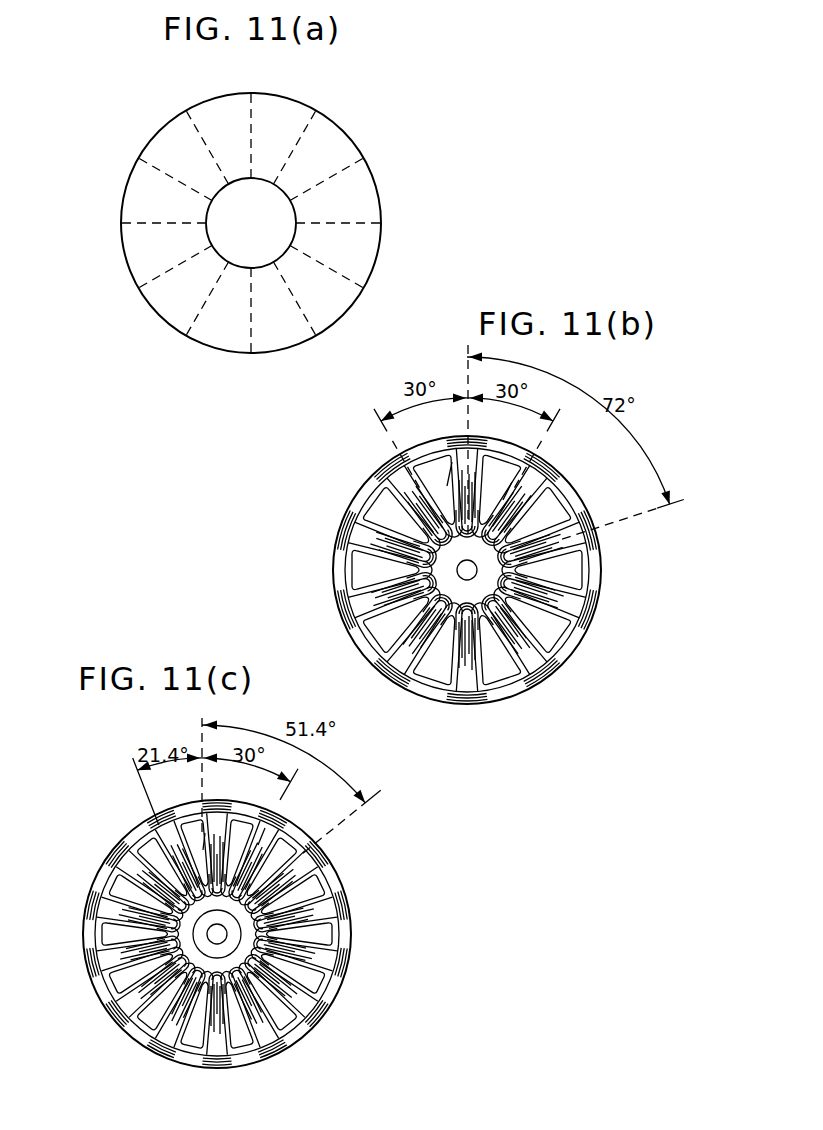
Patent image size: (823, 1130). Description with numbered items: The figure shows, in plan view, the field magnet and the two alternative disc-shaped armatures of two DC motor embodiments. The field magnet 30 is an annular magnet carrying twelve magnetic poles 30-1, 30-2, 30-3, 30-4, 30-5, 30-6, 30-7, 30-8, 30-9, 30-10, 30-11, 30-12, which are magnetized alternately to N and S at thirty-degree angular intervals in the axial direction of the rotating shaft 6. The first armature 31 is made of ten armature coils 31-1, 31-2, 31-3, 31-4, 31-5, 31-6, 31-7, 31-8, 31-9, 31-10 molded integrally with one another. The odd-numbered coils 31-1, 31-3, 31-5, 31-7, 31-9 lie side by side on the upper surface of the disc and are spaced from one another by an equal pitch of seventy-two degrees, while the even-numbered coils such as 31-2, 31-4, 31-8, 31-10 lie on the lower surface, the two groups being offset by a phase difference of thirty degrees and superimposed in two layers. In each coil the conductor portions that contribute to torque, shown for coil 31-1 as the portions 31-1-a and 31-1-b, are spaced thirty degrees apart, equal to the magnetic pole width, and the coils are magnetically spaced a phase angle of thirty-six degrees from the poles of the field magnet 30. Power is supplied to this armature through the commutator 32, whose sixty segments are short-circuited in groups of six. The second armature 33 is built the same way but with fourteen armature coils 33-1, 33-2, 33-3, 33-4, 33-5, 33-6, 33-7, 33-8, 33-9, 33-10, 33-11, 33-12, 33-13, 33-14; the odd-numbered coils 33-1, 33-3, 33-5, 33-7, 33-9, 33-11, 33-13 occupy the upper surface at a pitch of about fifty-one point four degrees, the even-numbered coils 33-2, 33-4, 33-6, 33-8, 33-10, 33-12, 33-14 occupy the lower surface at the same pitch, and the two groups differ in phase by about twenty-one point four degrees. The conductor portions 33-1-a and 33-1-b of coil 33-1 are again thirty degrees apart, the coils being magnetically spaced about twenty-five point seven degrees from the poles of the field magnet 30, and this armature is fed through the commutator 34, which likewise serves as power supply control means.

The field magnet 30 is at (380, 215).
The magnetic pole 30-1 is at (282, 102).
The magnetic pole 30-2 is at (345, 137).
The magnetic pole 30-3 is at (377, 193).
The magnetic pole 30-4 is at (380, 262).
The magnetic pole 30-5 is at (350, 309).
The magnetic pole 30-6 is at (285, 338).
The magnetic pole 30-7 is at (218, 340).
The magnetic pole 30-8 is at (167, 313).
The magnetic pole 30-9 is at (133, 244).
The magnetic pole 30-10 is at (135, 192).
The magnetic pole 30-11 is at (163, 137).
The magnetic pole 30-12 is at (218, 103).
The armature 31 is at (659, 631).
The armature coil 31-1 is at (482, 462).
The armature coil 31-2 is at (573, 493).
The armature coil 31-3 is at (600, 556).
The armature coil 31-4 is at (568, 653).
The armature coil 31-5 is at (515, 697).
The armature coil 31-6 is at (426, 697).
The armature coil 31-7 is at (368, 650).
The armature coil 31-8 is at (340, 563).
The armature coil 31-9 is at (357, 497).
The armature coil 31-10 is at (418, 444).
The conductor portion 31-1-a is at (453, 462).
The conductor portion 31-1-b is at (512, 482).
The commutator 32 is at (510, 565).
The rotating shaft 6 is at (457, 573).
The armature 33 is at (408, 906).
The armature coil 33-1 is at (229, 812).
The armature coil 33-2 is at (308, 833).
The armature coil 33-3 is at (333, 868).
The armature coil 33-4 is at (348, 953).
The armature coil 33-5 is at (332, 987).
The armature coil 33-6 is at (307, 1038).
The armature coil 33-7 is at (248, 1062).
The armature coil 33-8 is at (190, 1068).
The armature coil 33-9 is at (132, 1040).
The armature coil 33-10 is at (103, 992).
The armature coil 33-11 is at (88, 933).
The armature coil 33-12 is at (100, 873).
The armature coil 33-13 is at (128, 830).
The armature coil 33-14 is at (165, 808).
The conductor portion 33-1-a is at (205, 833).
The conductor portion 33-1-b is at (265, 828).
The commutator 34 is at (248, 932).